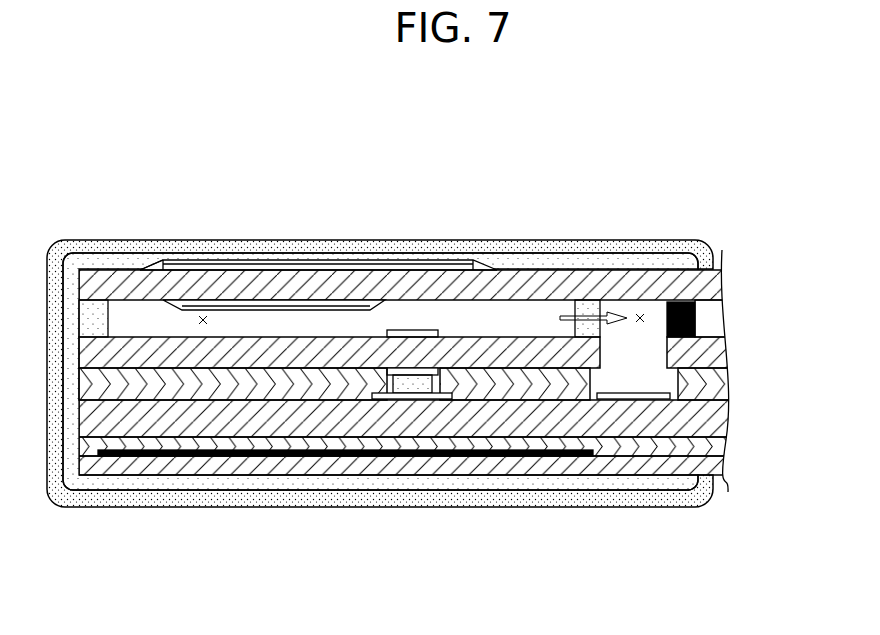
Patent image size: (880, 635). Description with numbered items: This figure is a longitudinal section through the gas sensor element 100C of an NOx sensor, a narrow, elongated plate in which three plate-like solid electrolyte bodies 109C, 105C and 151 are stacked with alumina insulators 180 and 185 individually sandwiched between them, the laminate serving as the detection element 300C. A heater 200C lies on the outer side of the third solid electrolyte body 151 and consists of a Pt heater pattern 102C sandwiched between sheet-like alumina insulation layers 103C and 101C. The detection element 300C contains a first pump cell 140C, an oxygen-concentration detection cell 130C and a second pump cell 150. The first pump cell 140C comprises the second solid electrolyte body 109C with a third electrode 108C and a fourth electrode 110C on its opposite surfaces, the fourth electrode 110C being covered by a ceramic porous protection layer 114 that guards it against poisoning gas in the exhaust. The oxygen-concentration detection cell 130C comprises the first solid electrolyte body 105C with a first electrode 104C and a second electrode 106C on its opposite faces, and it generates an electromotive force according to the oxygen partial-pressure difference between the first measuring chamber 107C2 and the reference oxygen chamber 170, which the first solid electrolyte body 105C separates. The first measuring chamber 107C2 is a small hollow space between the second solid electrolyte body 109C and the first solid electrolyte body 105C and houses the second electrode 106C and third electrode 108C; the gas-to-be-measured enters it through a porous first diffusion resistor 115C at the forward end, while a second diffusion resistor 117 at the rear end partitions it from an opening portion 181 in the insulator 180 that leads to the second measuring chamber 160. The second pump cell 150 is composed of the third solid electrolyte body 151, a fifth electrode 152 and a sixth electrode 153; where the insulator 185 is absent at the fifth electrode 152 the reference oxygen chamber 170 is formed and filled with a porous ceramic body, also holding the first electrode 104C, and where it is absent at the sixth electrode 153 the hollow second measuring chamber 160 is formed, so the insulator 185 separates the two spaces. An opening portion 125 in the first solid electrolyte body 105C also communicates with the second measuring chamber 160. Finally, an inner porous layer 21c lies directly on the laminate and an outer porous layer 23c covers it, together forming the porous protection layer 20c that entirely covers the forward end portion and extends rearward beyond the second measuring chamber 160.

The gas sensor element 100C is at (454, 347).
The porous protection layer 20c is at (380, 429).
The inner porous layer 21c is at (177, 576).
The outer porous layer 23c is at (141, 498).
The detection element 300C is at (470, 347).
The first pump cell 140C is at (409, 225).
The third electrode 108C is at (343, 176).
The fourth electrode 110C is at (258, 282).
The second solid electrolyte body 109C is at (300, 265).
The porous protection layer 114 is at (143, 268).
The first diffusion resistor 115C is at (110, 322).
The first measuring chamber 107C2 is at (205, 324).
The oxygen-concentration detection cell 130C is at (339, 263).
The first electrode 104C is at (383, 368).
The first solid electrolyte body 105C is at (498, 357).
The second electrode 106C is at (414, 333).
The second diffusion resistor 117 is at (587, 300).
The second measuring chamber 160 is at (640, 314).
The opening portion 181 is at (670, 303).
The opening portion 125 is at (667, 352).
The insulator 180 is at (707, 317).
The insulator 185 is at (710, 382).
The reference oxygen chamber 170 is at (388, 385).
The second pump cell 150 is at (409, 489).
The third solid electrolyte body 151 is at (472, 548).
The fifth electrode 152 is at (447, 400).
The sixth electrode 153 is at (617, 399).
The heater 200C is at (470, 493).
The insulation layer 103C is at (720, 447).
The heater pattern 102C is at (430, 457).
The insulation layer 101C is at (717, 467).